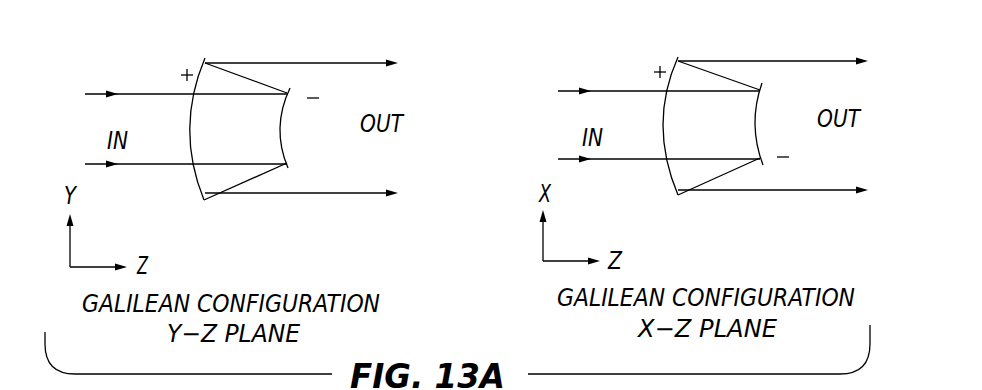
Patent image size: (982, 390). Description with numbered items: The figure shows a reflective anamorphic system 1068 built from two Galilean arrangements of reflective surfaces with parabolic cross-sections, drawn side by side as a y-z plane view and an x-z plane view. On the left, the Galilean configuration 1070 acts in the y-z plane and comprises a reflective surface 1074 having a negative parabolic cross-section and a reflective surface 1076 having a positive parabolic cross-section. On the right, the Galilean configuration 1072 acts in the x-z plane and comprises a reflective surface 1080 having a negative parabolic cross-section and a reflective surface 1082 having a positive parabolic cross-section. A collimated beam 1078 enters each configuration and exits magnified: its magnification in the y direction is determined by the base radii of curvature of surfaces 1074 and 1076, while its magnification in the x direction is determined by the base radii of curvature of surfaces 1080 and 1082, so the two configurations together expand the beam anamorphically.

The reflective anamorphic system 1068 is at (505, 62).
The Galilean configuration 1070 is at (273, 140).
The Galilean configuration 1072 is at (745, 150).
The reflective surface 1074 is at (283, 146).
The reflective surface 1076 is at (190, 138).
The collimated beam 1078 is at (90, 152).
The reflective surface 1080 is at (763, 106).
The reflective surface 1082 is at (664, 122).